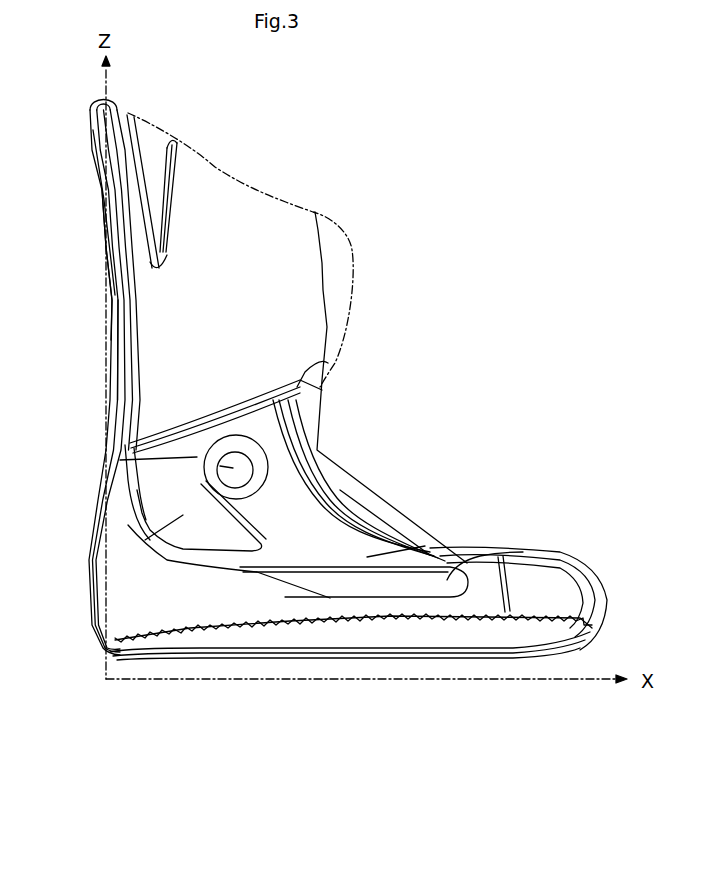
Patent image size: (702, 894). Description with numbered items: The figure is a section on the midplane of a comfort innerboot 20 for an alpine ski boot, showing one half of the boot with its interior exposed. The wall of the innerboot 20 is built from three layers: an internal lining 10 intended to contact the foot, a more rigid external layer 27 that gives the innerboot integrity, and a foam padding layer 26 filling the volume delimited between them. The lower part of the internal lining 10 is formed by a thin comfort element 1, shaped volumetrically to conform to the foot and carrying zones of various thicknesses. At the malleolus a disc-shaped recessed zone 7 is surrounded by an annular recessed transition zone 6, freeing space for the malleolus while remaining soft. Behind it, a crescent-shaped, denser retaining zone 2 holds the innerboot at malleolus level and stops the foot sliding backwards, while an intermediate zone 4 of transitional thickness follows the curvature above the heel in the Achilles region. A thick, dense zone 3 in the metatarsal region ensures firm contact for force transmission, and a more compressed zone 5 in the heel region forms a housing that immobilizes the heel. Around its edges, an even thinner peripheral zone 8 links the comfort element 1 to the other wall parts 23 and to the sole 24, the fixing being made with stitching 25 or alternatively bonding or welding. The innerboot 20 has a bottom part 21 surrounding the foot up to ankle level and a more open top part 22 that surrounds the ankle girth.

The comfort element 1 is at (310, 489).
The retaining zone 2 is at (115, 520).
The thick zone 3 is at (500, 553).
The intermediate zone 4 is at (462, 547).
The compressed zone 5 is at (123, 627).
The recessed transition zone 6 is at (215, 489).
The recessed zone 7 is at (150, 458).
The peripheral zone 8 is at (313, 453).
The internal lining 10 is at (133, 332).
The comfort innerboot 20 is at (250, 168).
The bottom part 21 is at (428, 522).
The top part 22 is at (122, 319).
The wall parts 23 is at (277, 292).
The sole 24 is at (320, 643).
The stitching 25 is at (168, 168).
The padding layer 26 is at (124, 375).
The external layer 27 is at (110, 295).